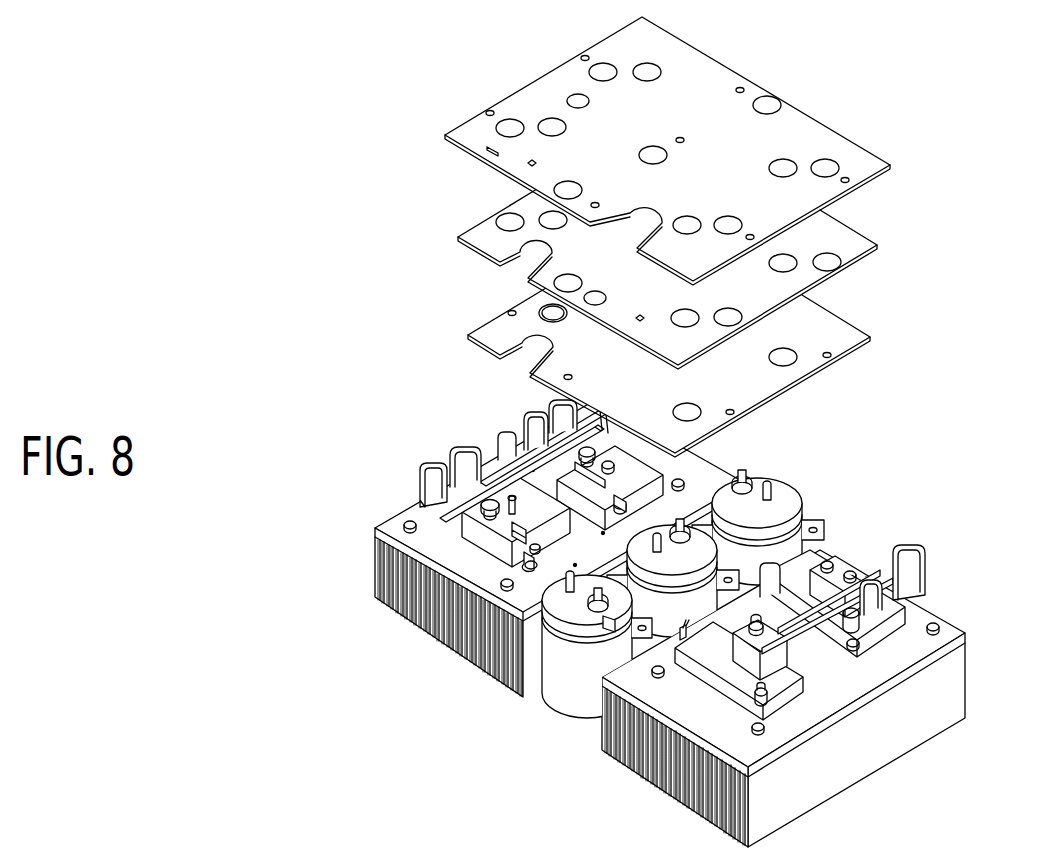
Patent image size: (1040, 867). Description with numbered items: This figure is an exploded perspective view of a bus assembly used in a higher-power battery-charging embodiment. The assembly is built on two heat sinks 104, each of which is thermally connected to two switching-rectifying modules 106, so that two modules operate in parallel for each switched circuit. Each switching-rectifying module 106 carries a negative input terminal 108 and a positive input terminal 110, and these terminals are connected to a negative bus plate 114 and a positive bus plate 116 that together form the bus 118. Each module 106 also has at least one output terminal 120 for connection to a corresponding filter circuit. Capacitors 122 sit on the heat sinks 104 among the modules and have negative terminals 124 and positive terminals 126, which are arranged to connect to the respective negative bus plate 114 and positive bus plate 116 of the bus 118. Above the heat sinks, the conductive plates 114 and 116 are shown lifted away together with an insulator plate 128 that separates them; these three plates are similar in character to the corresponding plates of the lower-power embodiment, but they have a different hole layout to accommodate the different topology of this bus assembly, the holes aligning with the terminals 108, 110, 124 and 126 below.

The heat sink 104 is at (477, 675).
The switching-rectifying module 106 is at (633, 457).
The negative input terminal 108 is at (455, 492).
The positive input terminal 110 is at (830, 562).
The negative bus plate 114 is at (818, 119).
The positive bus plate 116 is at (852, 326).
The bus 118 is at (942, 258).
The output terminal 120 is at (540, 457).
The capacitor 122 is at (667, 533).
The negative terminal 124 is at (747, 482).
The positive terminal 126 is at (771, 495).
The insulator plate 128 is at (857, 230).